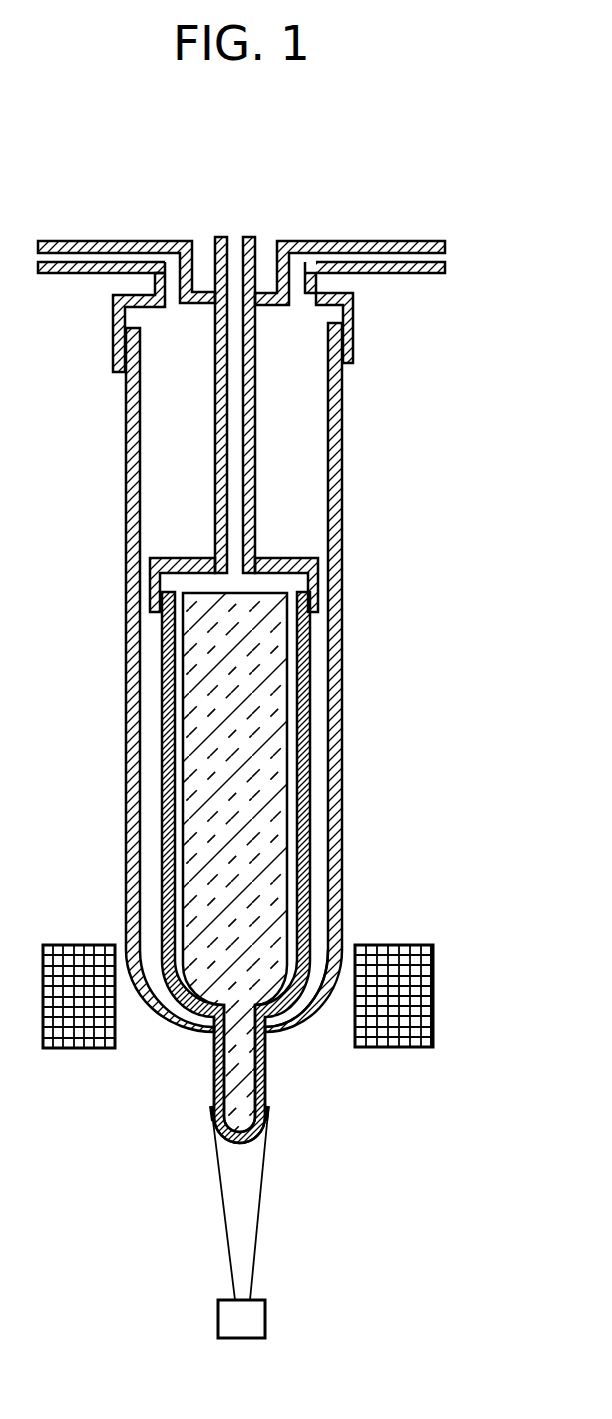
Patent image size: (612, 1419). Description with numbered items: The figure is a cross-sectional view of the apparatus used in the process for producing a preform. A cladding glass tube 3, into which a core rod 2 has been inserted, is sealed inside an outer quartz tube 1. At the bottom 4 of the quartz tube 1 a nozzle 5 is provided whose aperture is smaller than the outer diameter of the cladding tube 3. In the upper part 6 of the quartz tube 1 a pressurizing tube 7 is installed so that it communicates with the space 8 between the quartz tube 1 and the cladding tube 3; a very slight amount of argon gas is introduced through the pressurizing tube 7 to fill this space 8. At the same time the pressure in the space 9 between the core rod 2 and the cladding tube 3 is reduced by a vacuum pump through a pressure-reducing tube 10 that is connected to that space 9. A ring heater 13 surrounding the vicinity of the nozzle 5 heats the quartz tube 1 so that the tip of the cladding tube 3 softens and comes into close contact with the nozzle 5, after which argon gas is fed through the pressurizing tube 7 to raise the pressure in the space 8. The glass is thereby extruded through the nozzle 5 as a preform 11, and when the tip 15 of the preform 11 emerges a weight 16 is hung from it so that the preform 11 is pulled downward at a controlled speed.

The quartz tube 1 is at (343, 480).
The core rod 2 is at (268, 638).
The cladding glass tube 3 is at (303, 675).
The bottom of the quartz tube 4 is at (298, 1028).
The nozzle 5 is at (210, 1035).
The upper part of the quartz tube 6 is at (348, 316).
The pressurizing tube 7 is at (413, 273).
The space between the quartz tube and the cladding tube 8 is at (298, 387).
The space between the cladding glass tube and the core rod 9 is at (292, 760).
The pressure-reducing tube 10 is at (232, 243).
The preform 11 is at (263, 1082).
The ring heater 13 is at (430, 989).
The tip of the preform 15 is at (262, 1138).
The weight 16 is at (257, 1318).